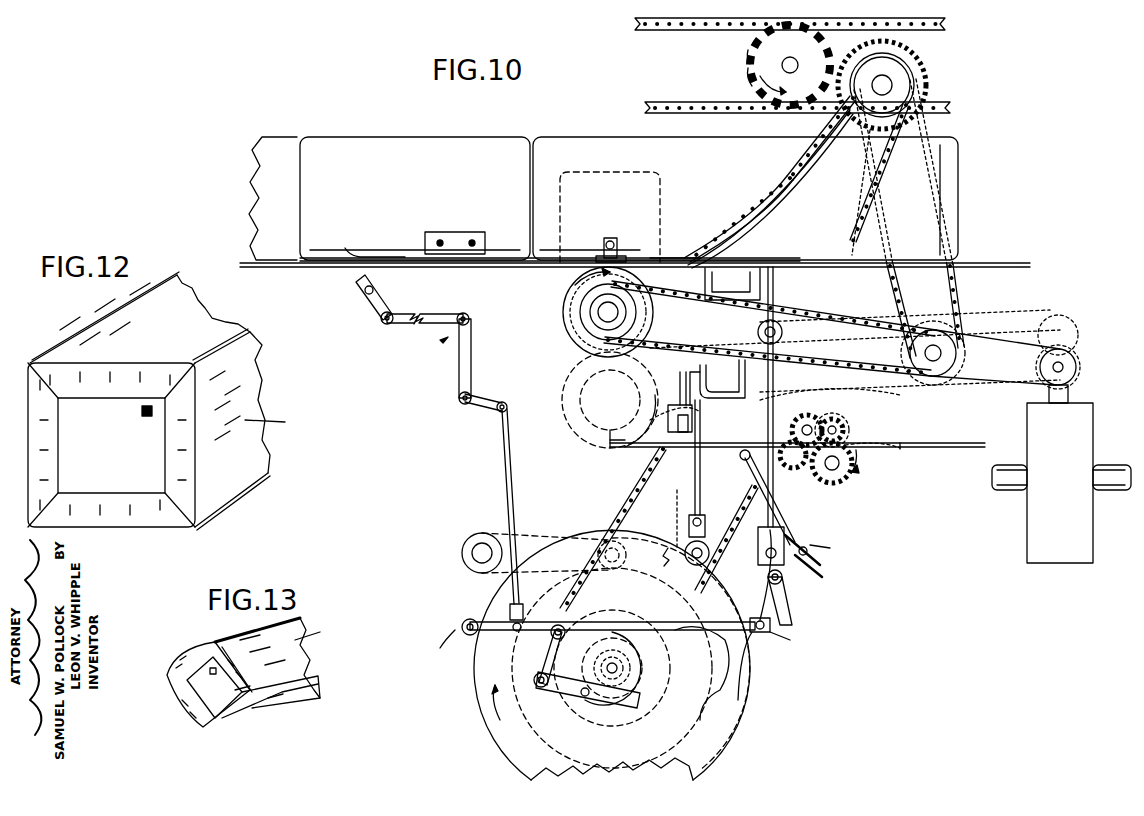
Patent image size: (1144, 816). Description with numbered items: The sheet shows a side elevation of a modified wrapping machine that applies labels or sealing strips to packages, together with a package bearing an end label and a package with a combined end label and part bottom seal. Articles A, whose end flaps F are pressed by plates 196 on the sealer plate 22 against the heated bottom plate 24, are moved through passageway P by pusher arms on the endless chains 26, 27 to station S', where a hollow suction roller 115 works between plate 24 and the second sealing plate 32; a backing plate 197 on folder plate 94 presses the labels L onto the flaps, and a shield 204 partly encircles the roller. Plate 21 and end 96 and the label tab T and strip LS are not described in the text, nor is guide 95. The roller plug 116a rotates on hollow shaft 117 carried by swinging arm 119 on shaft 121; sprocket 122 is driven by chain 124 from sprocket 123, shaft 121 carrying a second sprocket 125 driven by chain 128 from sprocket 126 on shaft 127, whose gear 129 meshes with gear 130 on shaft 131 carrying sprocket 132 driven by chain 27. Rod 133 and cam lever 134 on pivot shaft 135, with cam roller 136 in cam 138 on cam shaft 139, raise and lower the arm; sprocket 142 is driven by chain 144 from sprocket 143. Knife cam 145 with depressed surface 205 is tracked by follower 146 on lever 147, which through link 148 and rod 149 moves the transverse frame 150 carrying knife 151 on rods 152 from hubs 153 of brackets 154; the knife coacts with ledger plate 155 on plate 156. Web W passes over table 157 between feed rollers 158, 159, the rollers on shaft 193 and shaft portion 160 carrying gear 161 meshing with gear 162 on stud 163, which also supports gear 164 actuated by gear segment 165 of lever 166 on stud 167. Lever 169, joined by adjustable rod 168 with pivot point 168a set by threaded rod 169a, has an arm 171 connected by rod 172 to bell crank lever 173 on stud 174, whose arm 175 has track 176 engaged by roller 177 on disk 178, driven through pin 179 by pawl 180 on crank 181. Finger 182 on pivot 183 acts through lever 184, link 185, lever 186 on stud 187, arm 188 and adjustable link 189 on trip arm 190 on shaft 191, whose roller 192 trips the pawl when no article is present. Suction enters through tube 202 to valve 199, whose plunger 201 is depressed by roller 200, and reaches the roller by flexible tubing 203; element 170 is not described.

In FIG. 10, the plate 21 is at (262, 145).
In FIG. 10, the sealer plate 22 is at (345, 148).
In FIG. 10, the passageway P is at (428, 150).
In FIG. 10, the folder plate 94 is at (597, 150).
In FIG. 10, the plate end 96 is at (950, 165).
In FIG. 10, the article A is at (662, 180).
In FIG. 12, the article A is at (273, 424).
In FIG. 13, the article A is at (314, 630).
In FIG. 10, the station S' is at (665, 230).
In FIG. 10, the backing plate 197 is at (594, 252).
In FIG. 10, the plate 196 is at (412, 282).
In FIG. 10, the feeler or registering finger 182 is at (400, 262).
In FIG. 10, the second sealing plate 32 is at (995, 262).
In FIG. 10, the heated bottom plate 24 is at (300, 272).
In FIG. 10, the endless chain 26 is at (683, 32).
In FIG. 10, the endless chain 27 is at (797, 107).
In FIG. 10, the shaft 131 is at (790, 58).
In FIG. 10, the sprocket 132 is at (748, 56).
In FIG. 10, the gear 130 is at (746, 73).
In FIG. 10, the gear 129 is at (916, 88).
In FIG. 10, the shaft 127 is at (890, 83).
In FIG. 10, the sprocket 126 is at (894, 108).
In FIG. 10, the sprocket 143 is at (842, 135).
In FIG. 10, the guide 95 is at (748, 218).
In FIG. 10, the chain 144 is at (868, 182).
In FIG. 10, the chain 128 is at (920, 140).
In FIG. 10, the seal applying roller 115 is at (570, 328).
In FIG. 10, the plug 116a is at (568, 320).
In FIG. 10, the flexible tubing 203 is at (600, 322).
In FIG. 10, the sprocket 122 is at (630, 312).
In FIG. 10, the hollow stationary shaft 117 is at (615, 315).
In FIG. 10, the label L is at (580, 277).
In FIG. 12, the label L is at (125, 480).
In FIG. 10, the shield 204 is at (648, 420).
In FIG. 10, the chain 124 is at (786, 305).
In FIG. 10, the swinging arm 119 is at (820, 315).
In FIG. 10, the bracket 154 is at (755, 285).
In FIG. 10, the hub 153 is at (760, 398).
In FIG. 10, the rod 152 is at (680, 385).
In FIG. 10, the transverse frame 150 is at (692, 412).
In FIG. 10, the knife 151 is at (690, 430).
In FIG. 10, the gear 164 is at (855, 373).
In FIG. 10, the lever 166 is at (905, 409).
In FIG. 10, the second sprocket 125 is at (928, 325).
In FIG. 10, the sprocket 123 is at (905, 342).
In FIG. 10, the shaft 121 is at (935, 362).
In FIG. 10, the roller 200 is at (1068, 372).
In FIG. 10, the valve plunger 201 is at (1070, 395).
In FIG. 10, the valve 199 is at (1027, 545).
In FIG. 10, the tube 202 is at (1110, 490).
In FIG. 10, the web W is at (985, 442).
In FIG. 10, the rod 133 is at (778, 500).
In FIG. 10, the gear 162 is at (830, 382).
In FIG. 10, the stud 163 is at (812, 426).
In FIG. 10, the feed roller 158 is at (836, 426).
In FIG. 10, the shaft 193 is at (846, 426).
In FIG. 10, the feed roller 159 is at (883, 426).
In FIG. 10, the table 157 is at (885, 446).
In FIG. 10, the shaft portion 160 is at (850, 472).
In FIG. 10, the gear 161 is at (838, 468).
In FIG. 10, the gear segment 165 is at (800, 468).
In FIG. 10, the stud 167 is at (777, 497).
In FIG. 10, the adjustable rod 168 is at (810, 528).
In FIG. 10, the threaded rod 169a is at (820, 560).
In FIG. 10, the pivot point 168a is at (815, 572).
In FIG. 10, the lever 169 is at (782, 580).
In FIG. 10, the lever 170 is at (786, 595).
In FIG. 10, the cam lever 134 is at (775, 625).
In FIG. 10, the arm 171 is at (785, 635).
In FIG. 10, the rod 172 is at (750, 660).
In FIG. 10, the rod 149 is at (702, 480).
In FIG. 10, the link 148 is at (706, 520).
In FIG. 10, the lever 147 is at (663, 511).
In FIG. 10, the cam roller 136 is at (648, 545).
In FIG. 10, the ledger plate 155 is at (640, 450).
In FIG. 10, the plate 156 is at (612, 448).
In FIG. 10, the cam follower 146 is at (560, 523).
In FIG. 10, the pivot shaft 135 is at (478, 562).
In FIG. 10, the sprocket 142 is at (626, 612).
In FIG. 10, the cam follower 192 is at (629, 573).
In FIG. 10, the pin 179 is at (672, 605).
In FIG. 10, the disk 178 is at (650, 630).
In FIG. 10, the cam 138 is at (478, 670).
In FIG. 10, the cam shaft 139 is at (720, 705).
In FIG. 10, the depressed surface 205 is at (690, 740).
In FIG. 10, the knife cam 145 is at (545, 750).
In FIG. 10, the longitudinal track 176 is at (640, 715).
In FIG. 10, the arm 175 is at (568, 690).
In FIG. 10, the roller 177 is at (612, 703).
In FIG. 10, the stud 174 is at (540, 680).
In FIG. 10, the bell crank lever 173 is at (535, 664).
In FIG. 10, the crank 181 is at (565, 693).
In FIG. 10, the pawl 180 is at (556, 640).
In FIG. 10, the trip arm 190 is at (462, 627).
In FIG. 10, the shaft 191 is at (430, 639).
In FIG. 10, the adjustable link 189 is at (512, 505).
In FIG. 10, the arm 188 is at (485, 430).
In FIG. 10, the stud 187 is at (460, 412).
In FIG. 10, the lever 186 is at (460, 370).
In FIG. 10, the link 185 is at (425, 312).
In FIG. 10, the lever 184 is at (380, 325).
In FIG. 10, the pivot 183 is at (362, 292).
In FIG. 12, the end flap F is at (160, 520).
In FIG. 13, the end flap F is at (200, 718).
In FIG. 12, the tab T is at (140, 412).
In FIG. 13, the tab T is at (210, 672).
In FIG. 13, the slot LS is at (222, 705).